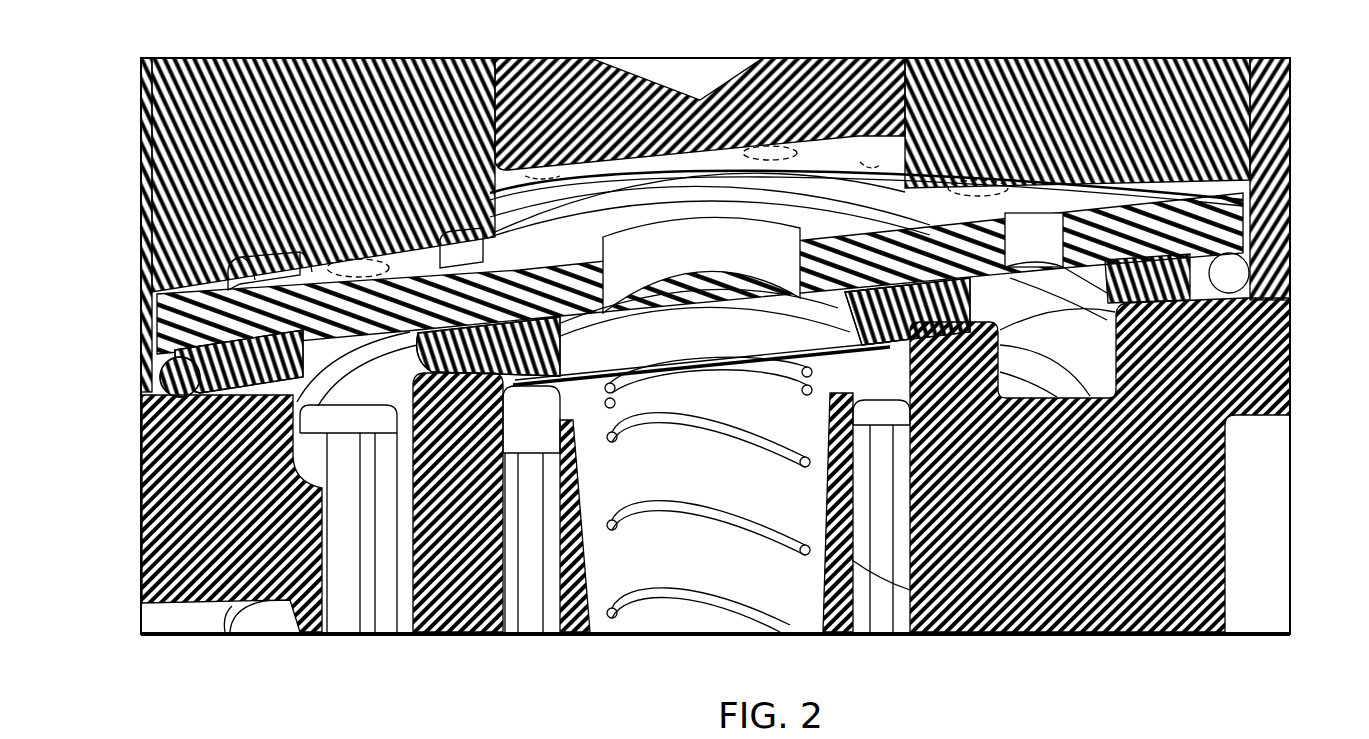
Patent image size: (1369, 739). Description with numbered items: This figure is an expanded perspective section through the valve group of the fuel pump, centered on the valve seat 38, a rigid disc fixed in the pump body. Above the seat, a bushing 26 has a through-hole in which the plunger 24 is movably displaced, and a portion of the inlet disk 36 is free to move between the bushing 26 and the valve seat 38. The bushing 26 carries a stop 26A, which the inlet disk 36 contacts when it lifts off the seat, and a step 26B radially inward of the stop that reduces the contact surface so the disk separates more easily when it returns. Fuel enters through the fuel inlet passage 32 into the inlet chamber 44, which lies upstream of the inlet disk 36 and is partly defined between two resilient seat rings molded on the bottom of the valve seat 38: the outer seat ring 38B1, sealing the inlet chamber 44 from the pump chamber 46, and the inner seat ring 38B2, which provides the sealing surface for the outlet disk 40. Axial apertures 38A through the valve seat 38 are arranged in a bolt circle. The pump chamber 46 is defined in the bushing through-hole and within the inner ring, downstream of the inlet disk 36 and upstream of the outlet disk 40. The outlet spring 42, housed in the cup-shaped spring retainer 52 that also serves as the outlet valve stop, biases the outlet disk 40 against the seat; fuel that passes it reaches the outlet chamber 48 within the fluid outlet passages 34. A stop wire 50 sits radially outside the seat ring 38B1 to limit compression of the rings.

The plunger 24 is at (680, 70).
The bushing 26 is at (425, 60).
The stop 26A is at (286, 256).
The step 26B is at (462, 245).
The fuel inlet passage 32 is at (338, 616).
The fluid outlet passage 34 is at (533, 616).
The inlet disk 36 is at (1045, 190).
The valve seat 38 is at (1247, 208).
The apertures 38A is at (364, 258).
The seat ring 38B1 is at (192, 378).
The seat ring 38B2 is at (463, 378).
The outlet disk 40 is at (790, 331).
The outlet spring 42 is at (862, 540).
The inlet chamber 44 is at (232, 513).
The pump chamber 46 is at (890, 150).
The outlet chamber 48 is at (903, 394).
The stop wire 50 is at (1232, 271).
The spring retainer 52 is at (850, 585).